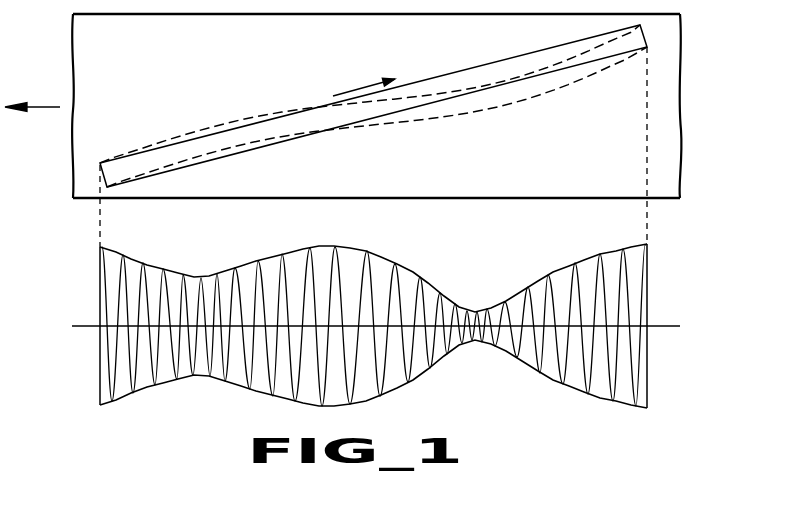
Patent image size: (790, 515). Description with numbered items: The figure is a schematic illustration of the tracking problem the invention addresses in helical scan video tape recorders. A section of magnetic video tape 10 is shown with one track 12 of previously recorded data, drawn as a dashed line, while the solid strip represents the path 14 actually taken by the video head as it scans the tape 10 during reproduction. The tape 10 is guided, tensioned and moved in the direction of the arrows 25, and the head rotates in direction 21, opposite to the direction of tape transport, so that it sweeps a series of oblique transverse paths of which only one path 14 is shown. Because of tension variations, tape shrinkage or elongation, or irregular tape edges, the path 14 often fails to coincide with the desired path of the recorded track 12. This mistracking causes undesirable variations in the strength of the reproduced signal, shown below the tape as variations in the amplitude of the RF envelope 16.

The magnetic video tape 10 is at (670, 198).
The track 12 is at (458, 115).
The path 14 is at (435, 78).
The RF envelope 16 is at (413, 280).
The direction of head rotation 21 is at (362, 88).
The direction of tape movement 25 is at (40, 104).